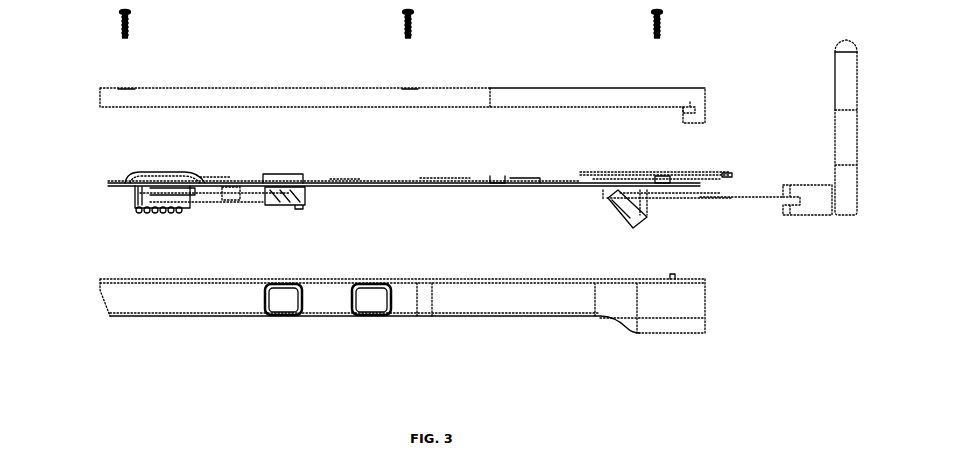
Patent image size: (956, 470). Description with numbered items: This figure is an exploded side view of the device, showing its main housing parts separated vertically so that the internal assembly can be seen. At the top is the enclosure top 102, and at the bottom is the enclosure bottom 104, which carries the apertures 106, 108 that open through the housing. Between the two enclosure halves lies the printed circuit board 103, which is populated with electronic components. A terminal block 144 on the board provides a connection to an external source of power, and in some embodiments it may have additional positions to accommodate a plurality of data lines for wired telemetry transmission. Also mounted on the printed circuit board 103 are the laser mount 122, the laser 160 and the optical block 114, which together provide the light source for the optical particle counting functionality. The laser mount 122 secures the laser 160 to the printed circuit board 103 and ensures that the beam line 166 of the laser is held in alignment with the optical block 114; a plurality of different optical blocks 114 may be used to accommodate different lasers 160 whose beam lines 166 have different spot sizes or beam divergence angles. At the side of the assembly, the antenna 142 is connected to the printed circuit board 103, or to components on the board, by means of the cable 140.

The enclosure top 102 is at (120, 102).
The printed circuit board 103 is at (117, 184).
The enclosure bottom 104 is at (158, 302).
The aperture 106 is at (285, 300).
The aperture 108 is at (371, 300).
The optical block 114 is at (263, 200).
The laser mount 122 is at (143, 212).
The cable 140 is at (732, 195).
The antenna 142 is at (847, 130).
The terminal block 144 is at (643, 217).
The laser 160 is at (130, 197).
The beam line 166 is at (230, 195).